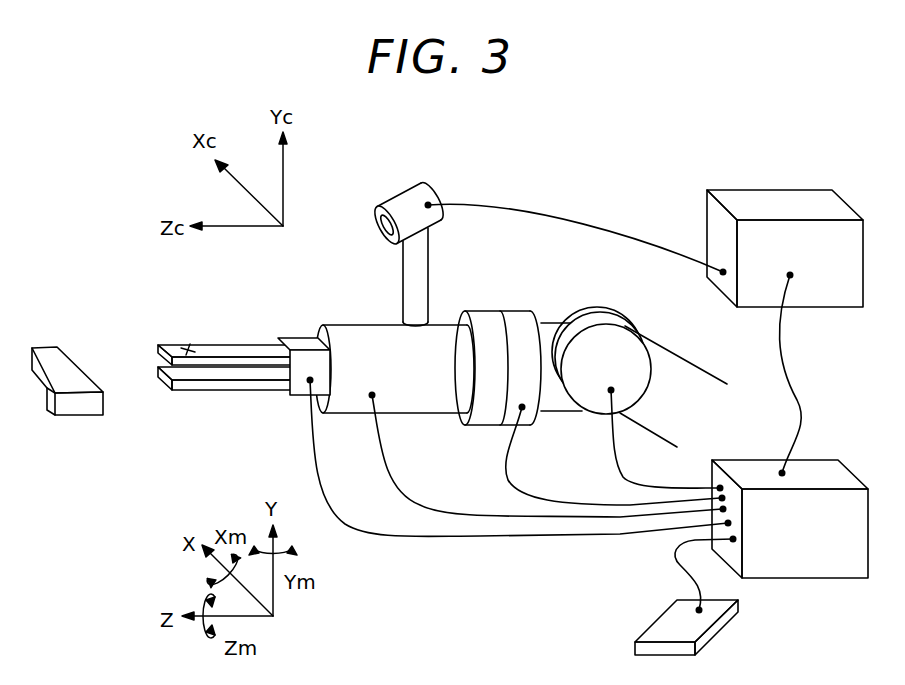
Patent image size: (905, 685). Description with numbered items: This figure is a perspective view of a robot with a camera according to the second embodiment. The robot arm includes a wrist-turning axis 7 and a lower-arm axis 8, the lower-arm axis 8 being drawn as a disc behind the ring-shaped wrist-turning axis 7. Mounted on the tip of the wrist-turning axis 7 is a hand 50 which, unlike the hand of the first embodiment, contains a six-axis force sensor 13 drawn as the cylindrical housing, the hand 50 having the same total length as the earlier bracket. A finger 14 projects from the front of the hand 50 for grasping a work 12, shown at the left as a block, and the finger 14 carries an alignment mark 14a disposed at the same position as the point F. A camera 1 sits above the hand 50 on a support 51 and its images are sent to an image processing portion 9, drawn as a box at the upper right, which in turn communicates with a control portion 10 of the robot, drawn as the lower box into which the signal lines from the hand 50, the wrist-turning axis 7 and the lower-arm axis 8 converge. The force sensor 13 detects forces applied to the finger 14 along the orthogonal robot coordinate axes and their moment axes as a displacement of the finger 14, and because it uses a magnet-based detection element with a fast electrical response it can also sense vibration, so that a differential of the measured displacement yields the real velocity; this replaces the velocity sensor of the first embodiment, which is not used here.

The camera 1 is at (403, 196).
The camera support stem 51 is at (429, 260).
The 6-axis force sensor 13 is at (350, 323).
The finger 14 is at (233, 347).
The alignment mark 14a is at (186, 349).
The hand 50 is at (183, 427).
The J7 axis 7 is at (488, 426).
The J6 axis 8 is at (594, 413).
The image processing portion 9 is at (833, 300).
The control portion 10 is at (819, 568).
The work 12 is at (80, 412).